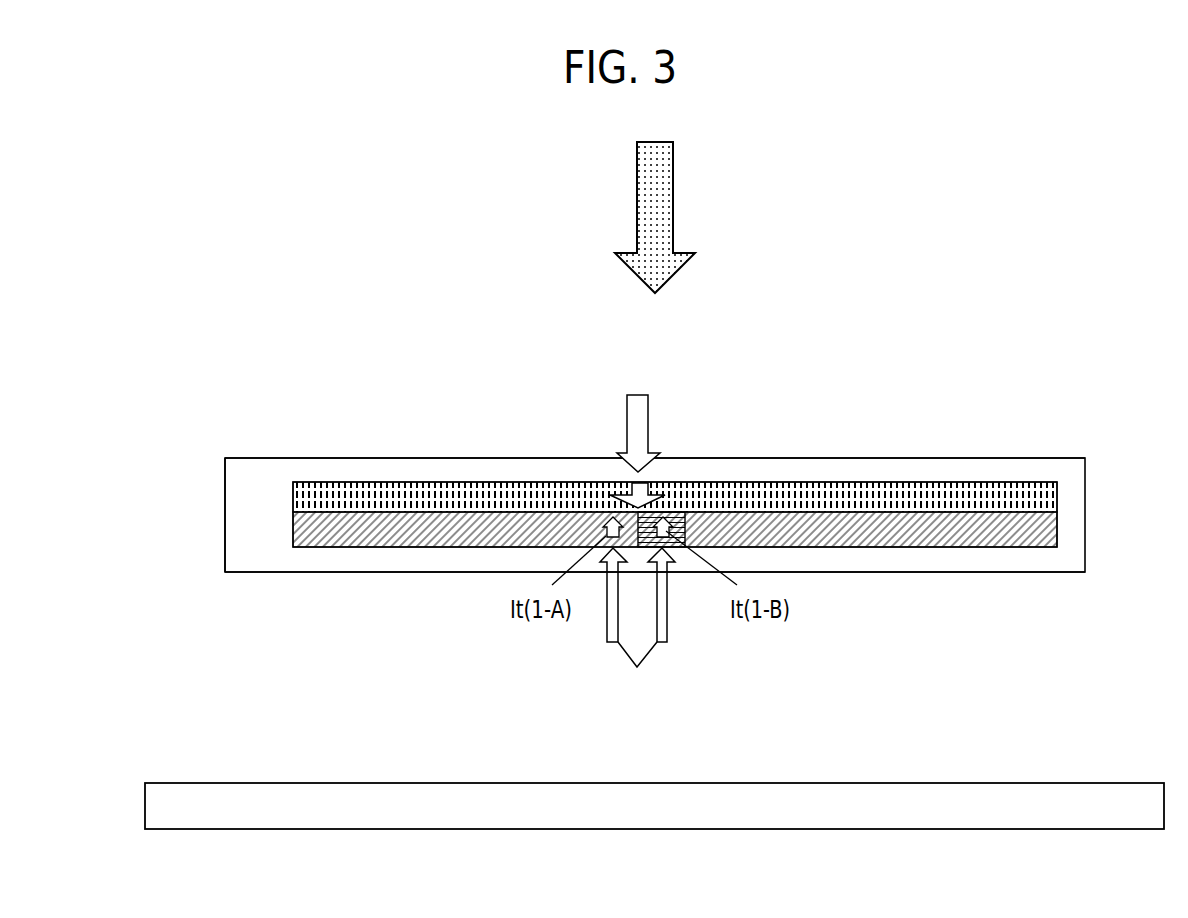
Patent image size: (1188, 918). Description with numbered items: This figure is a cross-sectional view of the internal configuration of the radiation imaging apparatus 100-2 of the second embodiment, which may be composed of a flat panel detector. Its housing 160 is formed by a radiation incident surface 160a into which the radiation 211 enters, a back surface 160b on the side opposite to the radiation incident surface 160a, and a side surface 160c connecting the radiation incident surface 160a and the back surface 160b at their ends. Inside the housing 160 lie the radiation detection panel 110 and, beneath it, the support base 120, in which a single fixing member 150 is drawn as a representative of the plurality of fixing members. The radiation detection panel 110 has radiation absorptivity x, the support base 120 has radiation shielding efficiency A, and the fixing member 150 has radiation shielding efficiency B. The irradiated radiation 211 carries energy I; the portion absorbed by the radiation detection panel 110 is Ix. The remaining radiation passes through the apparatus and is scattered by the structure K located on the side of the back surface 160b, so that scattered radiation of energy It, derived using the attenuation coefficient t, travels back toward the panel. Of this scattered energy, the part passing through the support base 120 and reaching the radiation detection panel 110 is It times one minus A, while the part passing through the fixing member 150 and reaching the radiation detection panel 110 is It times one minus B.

The radiation 211 is at (647, 212).
The radiation imaging apparatus 100-2 is at (327, 427).
The housing 160 is at (940, 458).
The radiation incident surface 160a is at (252, 457).
The back surface 160b is at (252, 573).
The side surface 160c is at (224, 513).
The radiation detection panel 110 is at (465, 497).
The support base 120 is at (440, 528).
The fixing member 150 is at (678, 518).
The energy of the irradiated radiation I is at (642, 435).
The energy absorbed by the radiation detection panel Ix is at (636, 497).
The energy of the scattered radiation It is at (637, 624).
The structure K is at (652, 815).